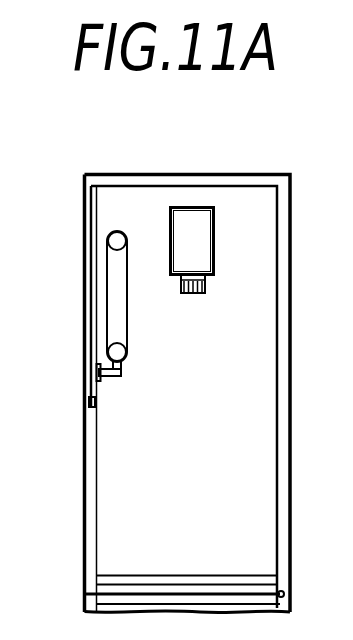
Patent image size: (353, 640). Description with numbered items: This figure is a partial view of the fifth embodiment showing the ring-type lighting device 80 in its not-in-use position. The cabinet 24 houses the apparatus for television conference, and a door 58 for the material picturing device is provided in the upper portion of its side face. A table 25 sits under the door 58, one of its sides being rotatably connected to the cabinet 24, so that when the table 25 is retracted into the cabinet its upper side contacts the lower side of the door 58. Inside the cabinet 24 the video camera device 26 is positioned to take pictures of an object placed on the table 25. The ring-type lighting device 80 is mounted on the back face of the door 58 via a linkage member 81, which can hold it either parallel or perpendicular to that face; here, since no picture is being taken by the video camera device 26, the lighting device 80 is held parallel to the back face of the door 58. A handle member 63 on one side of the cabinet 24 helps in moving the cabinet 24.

The cabinet 24 is at (291, 238).
The video camera device 26 is at (214, 246).
The ring-type lighting device 80 is at (128, 327).
The linkage member 81 is at (122, 372).
The door 58 is at (97, 397).
The table 25 is at (155, 575).
The handle member 63 is at (86, 594).